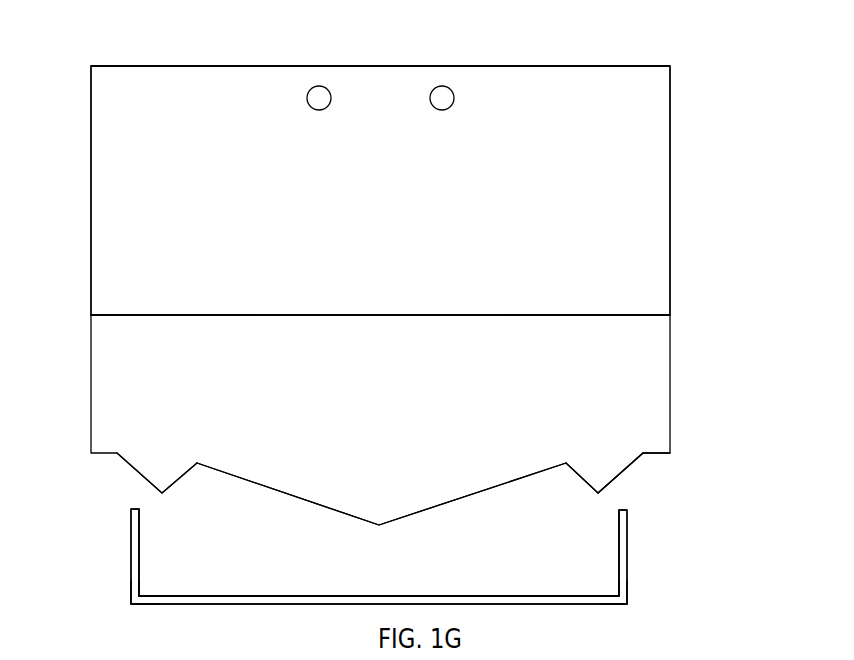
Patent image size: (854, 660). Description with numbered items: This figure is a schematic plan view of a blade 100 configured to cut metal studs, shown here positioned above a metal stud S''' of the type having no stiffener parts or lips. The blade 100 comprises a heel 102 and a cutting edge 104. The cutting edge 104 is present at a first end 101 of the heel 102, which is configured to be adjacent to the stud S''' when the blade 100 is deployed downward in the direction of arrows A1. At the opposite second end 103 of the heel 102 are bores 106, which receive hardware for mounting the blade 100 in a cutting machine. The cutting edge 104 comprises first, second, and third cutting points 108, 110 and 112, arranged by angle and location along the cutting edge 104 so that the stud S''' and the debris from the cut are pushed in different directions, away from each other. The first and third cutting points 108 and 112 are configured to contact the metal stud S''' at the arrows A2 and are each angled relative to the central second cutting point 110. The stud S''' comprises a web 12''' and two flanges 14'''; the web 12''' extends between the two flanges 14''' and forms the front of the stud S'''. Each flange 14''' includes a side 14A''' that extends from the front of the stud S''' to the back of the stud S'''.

The blade 100 is at (704, 124).
The first end 101 is at (721, 478).
The heel 102 is at (402, 187).
The second end 103 is at (81, 69).
The cutting edge 104 is at (635, 465).
The bores 106 is at (441, 86).
The first cutting point 108 is at (163, 490).
The second cutting point 110 is at (381, 522).
The third cutting point 112 is at (600, 490).
The web 12''' is at (379, 623).
The flanges 14''' is at (381, 548).
The side 14A''' is at (374, 619).
The metal stud S''' is at (404, 552).
The arrows A1 is at (70, 198).
The arrows A2 is at (175, 584).